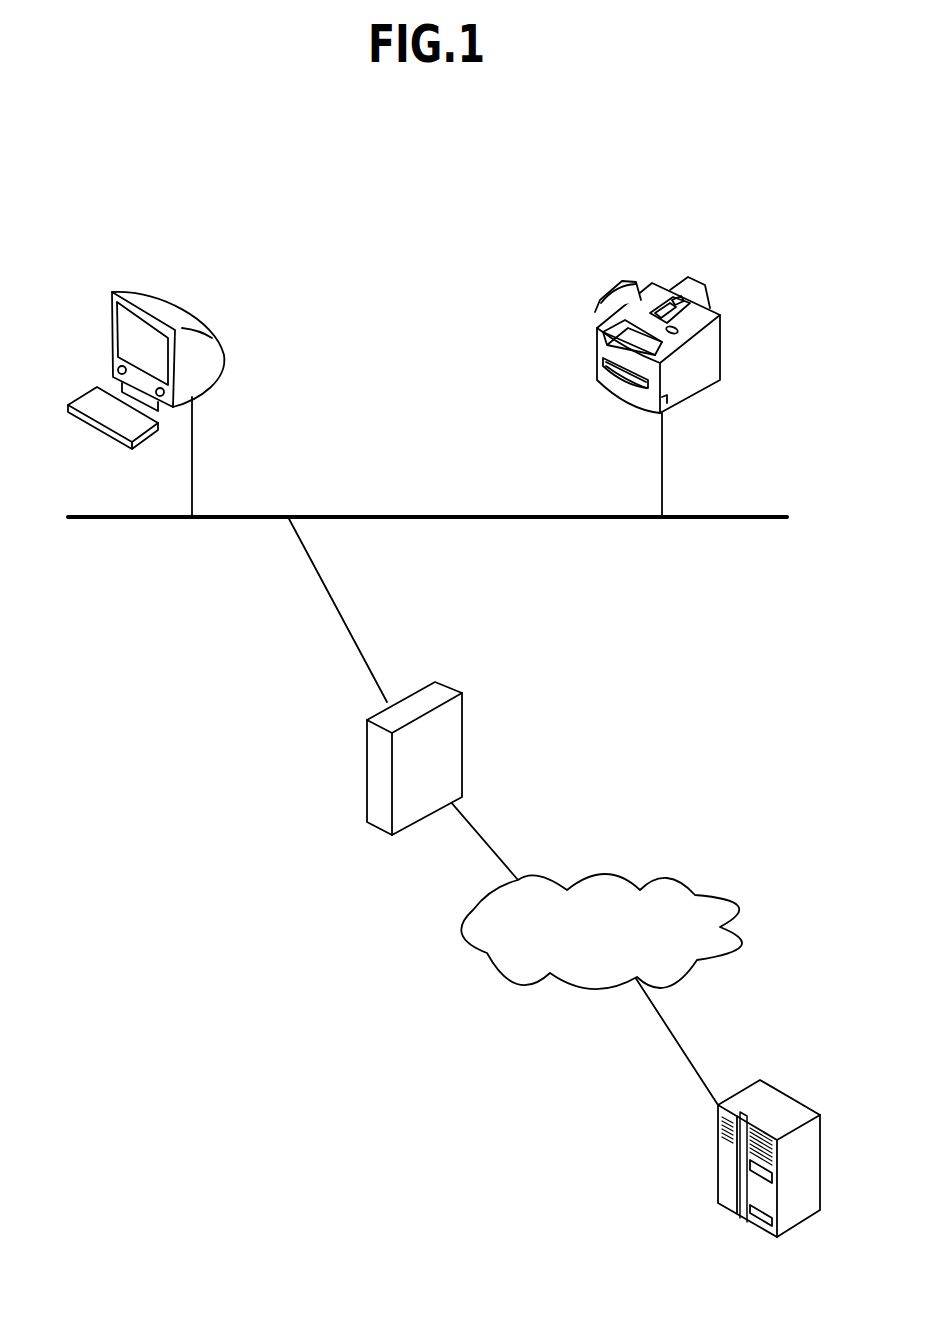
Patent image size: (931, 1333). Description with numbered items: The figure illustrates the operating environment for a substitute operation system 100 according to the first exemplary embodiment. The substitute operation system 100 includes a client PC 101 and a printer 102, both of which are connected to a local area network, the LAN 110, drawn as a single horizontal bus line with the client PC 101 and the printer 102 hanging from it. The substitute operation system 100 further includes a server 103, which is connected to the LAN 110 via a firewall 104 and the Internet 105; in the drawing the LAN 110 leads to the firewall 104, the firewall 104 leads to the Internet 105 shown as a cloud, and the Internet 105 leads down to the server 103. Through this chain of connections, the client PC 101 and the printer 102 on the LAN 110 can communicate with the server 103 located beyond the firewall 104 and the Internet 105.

The substitute operation system 100 is at (452, 204).
The client PC 101 is at (178, 300).
The printer 102 is at (665, 281).
The server 103 is at (715, 1163).
The firewall 104 is at (450, 686).
The Internet 105 is at (605, 875).
The local area network (LAN) 110 is at (430, 515).